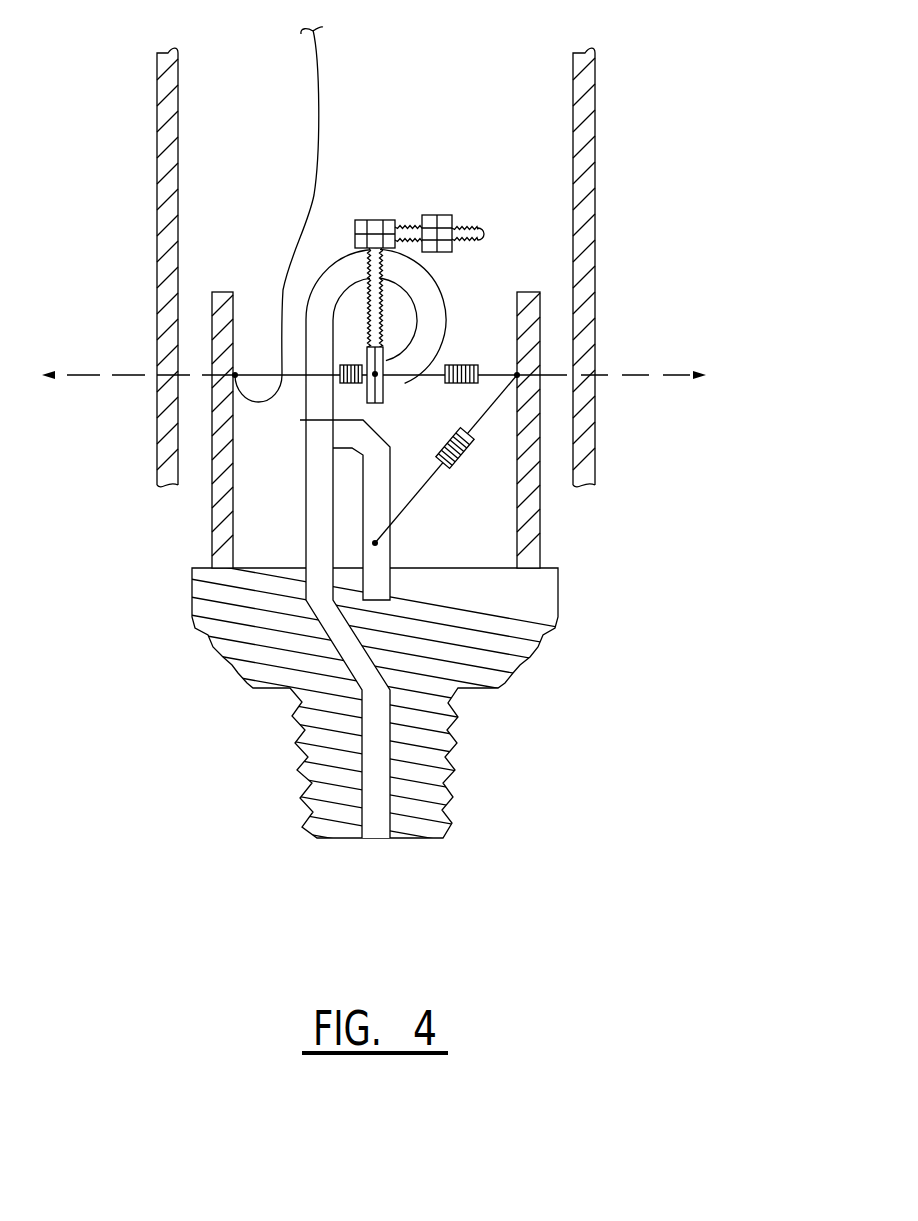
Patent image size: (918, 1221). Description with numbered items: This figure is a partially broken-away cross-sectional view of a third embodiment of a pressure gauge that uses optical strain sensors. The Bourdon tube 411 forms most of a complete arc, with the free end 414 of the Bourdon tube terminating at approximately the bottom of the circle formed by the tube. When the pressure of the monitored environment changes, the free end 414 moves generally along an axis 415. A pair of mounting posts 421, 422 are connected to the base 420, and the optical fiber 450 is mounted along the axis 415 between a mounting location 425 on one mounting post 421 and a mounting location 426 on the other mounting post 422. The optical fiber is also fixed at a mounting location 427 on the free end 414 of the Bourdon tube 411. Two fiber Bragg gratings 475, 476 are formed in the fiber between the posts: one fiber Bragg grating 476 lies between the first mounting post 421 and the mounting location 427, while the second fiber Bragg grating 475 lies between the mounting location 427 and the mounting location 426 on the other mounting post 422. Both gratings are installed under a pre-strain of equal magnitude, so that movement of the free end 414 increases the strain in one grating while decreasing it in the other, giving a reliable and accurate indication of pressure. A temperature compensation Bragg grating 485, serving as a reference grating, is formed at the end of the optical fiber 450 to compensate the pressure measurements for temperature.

The Bourdon tube 411 is at (427, 303).
The free end of the Bourdon tube 414 is at (408, 384).
The axis 415 is at (405, 372).
The base 420 is at (502, 645).
The mounting post 421 is at (219, 290).
The mounting post 422 is at (522, 291).
The mounting location 425 is at (235, 375).
The mounting location 426 is at (517, 374).
The mounting location 427 is at (367, 579).
The optical fiber 450 is at (318, 74).
The fiber Bragg grating 475 is at (462, 364).
The fiber Bragg grating 476 is at (351, 364).
The temperature compensation Bragg grating 485 is at (464, 462).